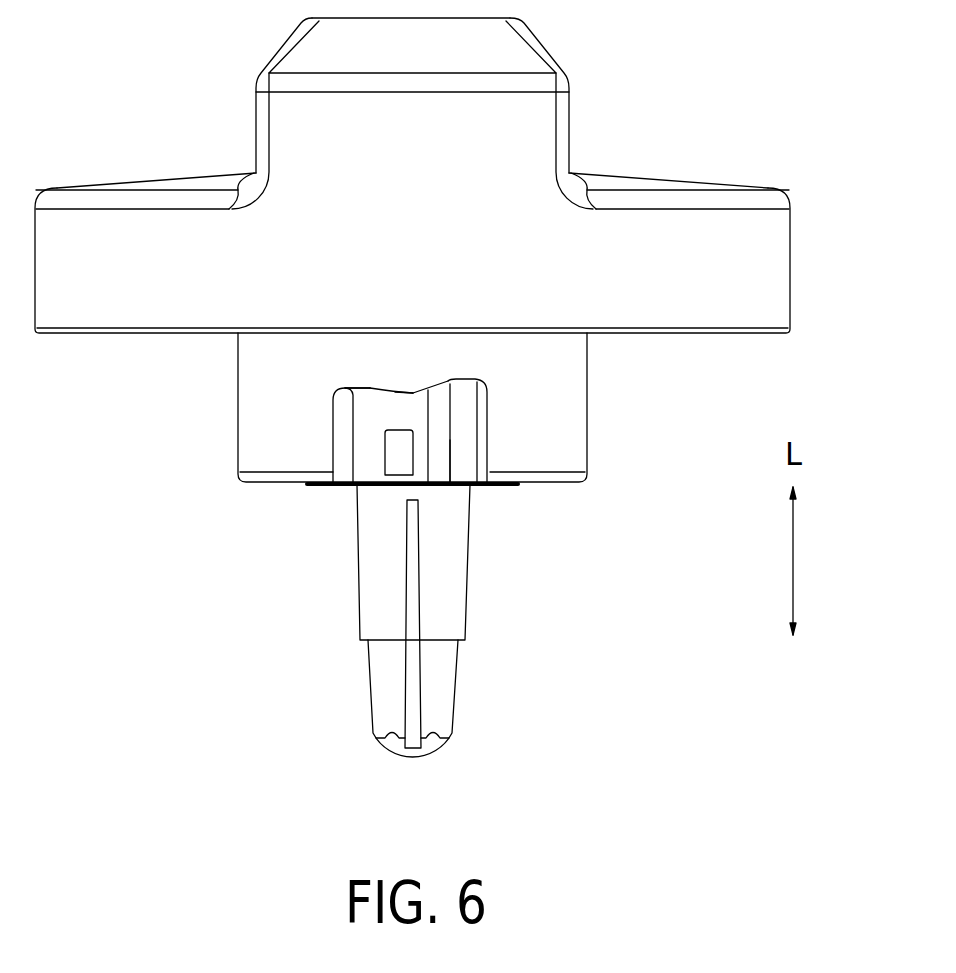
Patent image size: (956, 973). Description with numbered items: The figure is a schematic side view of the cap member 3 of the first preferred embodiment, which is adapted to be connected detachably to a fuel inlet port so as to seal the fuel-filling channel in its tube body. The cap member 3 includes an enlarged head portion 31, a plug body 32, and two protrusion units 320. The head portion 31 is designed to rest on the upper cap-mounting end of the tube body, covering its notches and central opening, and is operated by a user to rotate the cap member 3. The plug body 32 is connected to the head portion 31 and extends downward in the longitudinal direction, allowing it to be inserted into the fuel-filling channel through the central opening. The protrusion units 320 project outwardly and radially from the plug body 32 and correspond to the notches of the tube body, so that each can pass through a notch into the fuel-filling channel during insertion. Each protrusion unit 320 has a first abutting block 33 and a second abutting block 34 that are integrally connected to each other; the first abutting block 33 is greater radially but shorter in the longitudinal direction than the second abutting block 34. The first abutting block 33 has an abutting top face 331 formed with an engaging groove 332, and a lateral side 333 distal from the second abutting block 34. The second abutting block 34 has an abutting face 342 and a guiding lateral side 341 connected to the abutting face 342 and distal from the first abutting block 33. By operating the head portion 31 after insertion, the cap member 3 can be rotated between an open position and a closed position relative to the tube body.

The cap member 3 is at (645, 417).
The enlarged head portion 31 is at (792, 268).
The plug body 32 is at (592, 412).
The protrusion unit 320 is at (385, 385).
The first abutting block 33 is at (333, 445).
The abutting top face 331 is at (367, 390).
The engaging groove 332 is at (412, 392).
The lateral side 333 is at (345, 460).
The second abutting block 34 is at (490, 392).
The guiding lateral side 341 is at (485, 402).
The abutting face 342 is at (460, 425).